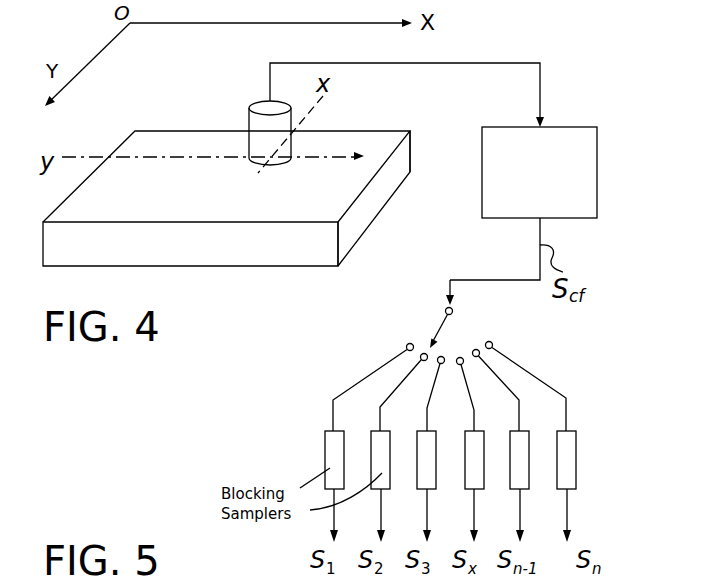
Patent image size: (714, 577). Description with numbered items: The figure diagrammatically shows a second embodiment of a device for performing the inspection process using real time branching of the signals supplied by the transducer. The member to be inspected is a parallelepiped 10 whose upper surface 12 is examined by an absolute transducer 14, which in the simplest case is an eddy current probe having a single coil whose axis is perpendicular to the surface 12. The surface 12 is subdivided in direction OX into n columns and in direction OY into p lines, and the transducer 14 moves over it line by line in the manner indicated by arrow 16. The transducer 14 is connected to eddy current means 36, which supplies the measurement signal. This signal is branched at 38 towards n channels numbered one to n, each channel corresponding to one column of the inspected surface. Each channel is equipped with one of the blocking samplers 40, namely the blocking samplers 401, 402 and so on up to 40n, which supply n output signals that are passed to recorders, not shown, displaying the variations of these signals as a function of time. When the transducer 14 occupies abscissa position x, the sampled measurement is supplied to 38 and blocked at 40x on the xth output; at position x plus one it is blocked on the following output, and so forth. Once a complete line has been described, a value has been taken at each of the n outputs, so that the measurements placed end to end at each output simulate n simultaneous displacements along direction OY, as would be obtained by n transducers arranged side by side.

In FIG. 4, the parallelepiped 10 is at (232, 247).
In FIG. 4, the upper surface 12 is at (325, 210).
In FIG. 4, the absolute transducer 14 is at (250, 118).
In FIG. 4, the arrow 16 is at (337, 157).
In FIG. 4, the eddy current means 36 is at (500, 143).
In FIG. 5, the branching point 38 is at (432, 340).
In FIG. 5, the blocking samplers 40 is at (430, 445).
In FIG. 5, the blocking sampler of channel one 401 is at (328, 452).
In FIG. 5, the blocking sampler of channel two 402 is at (378, 445).
In FIG. 5, the blocking sampler of channel x 40x is at (478, 432).
In FIG. 5, the blocking sampler of channel n 40n is at (571, 442).